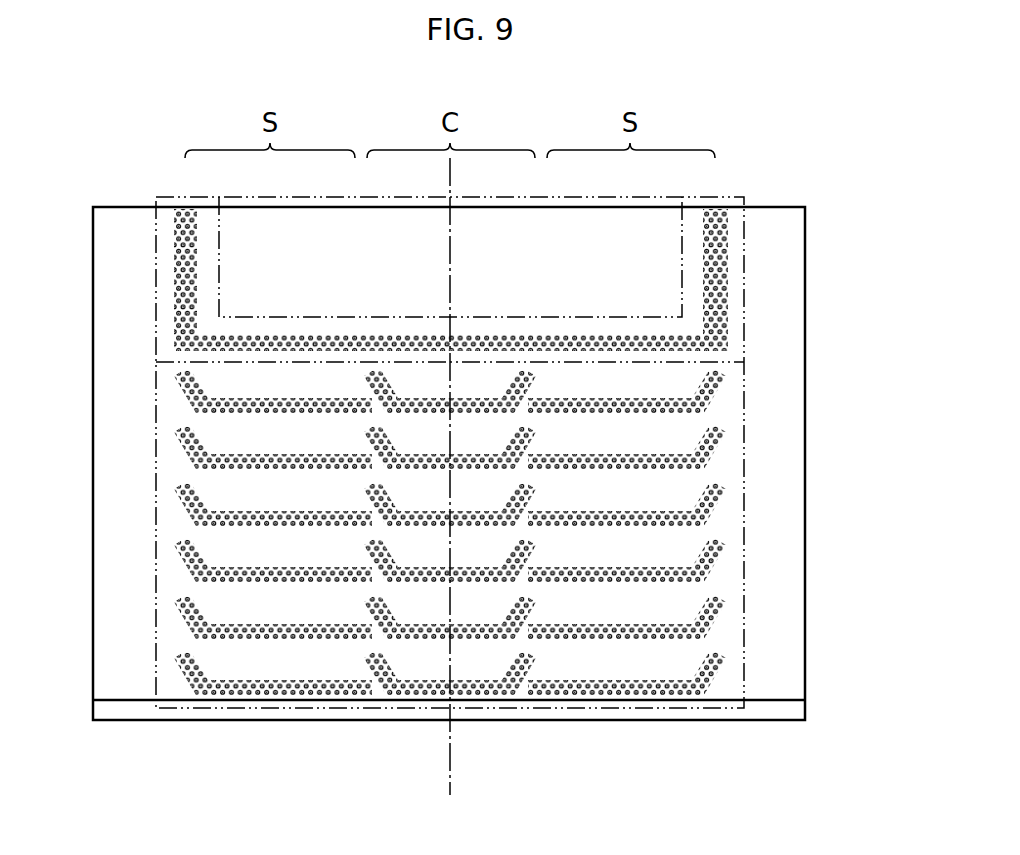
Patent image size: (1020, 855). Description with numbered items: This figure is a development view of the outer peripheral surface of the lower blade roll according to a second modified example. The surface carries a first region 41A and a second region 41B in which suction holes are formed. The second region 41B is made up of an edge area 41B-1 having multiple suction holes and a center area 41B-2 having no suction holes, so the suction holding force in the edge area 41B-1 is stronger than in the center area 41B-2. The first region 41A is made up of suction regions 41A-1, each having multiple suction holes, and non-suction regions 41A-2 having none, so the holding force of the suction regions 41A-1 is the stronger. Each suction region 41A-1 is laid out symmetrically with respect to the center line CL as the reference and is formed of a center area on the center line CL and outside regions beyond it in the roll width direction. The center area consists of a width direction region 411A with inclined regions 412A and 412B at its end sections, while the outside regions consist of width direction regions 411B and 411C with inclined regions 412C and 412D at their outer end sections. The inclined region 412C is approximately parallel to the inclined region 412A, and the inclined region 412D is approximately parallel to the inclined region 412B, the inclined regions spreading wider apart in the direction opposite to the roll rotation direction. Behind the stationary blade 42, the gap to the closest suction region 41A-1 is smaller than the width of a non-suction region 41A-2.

The first region 41A is at (465, 580).
The suction region 41A-1 is at (712, 568).
The non-suction region 41A-2 is at (688, 427).
The second region 41B is at (465, 255).
The edge area 41B-1 is at (740, 252).
The center area 41B-2 is at (587, 220).
The width direction region 411A is at (415, 637).
The width direction region 411B is at (228, 695).
The width direction region 411C is at (648, 695).
The inclined region 412A is at (380, 625).
The inclined region 412B is at (520, 620).
The inclined region 412C is at (190, 627).
The inclined region 412D is at (715, 623).
The stationary blade 42 is at (712, 715).
The center line CL is at (452, 178).